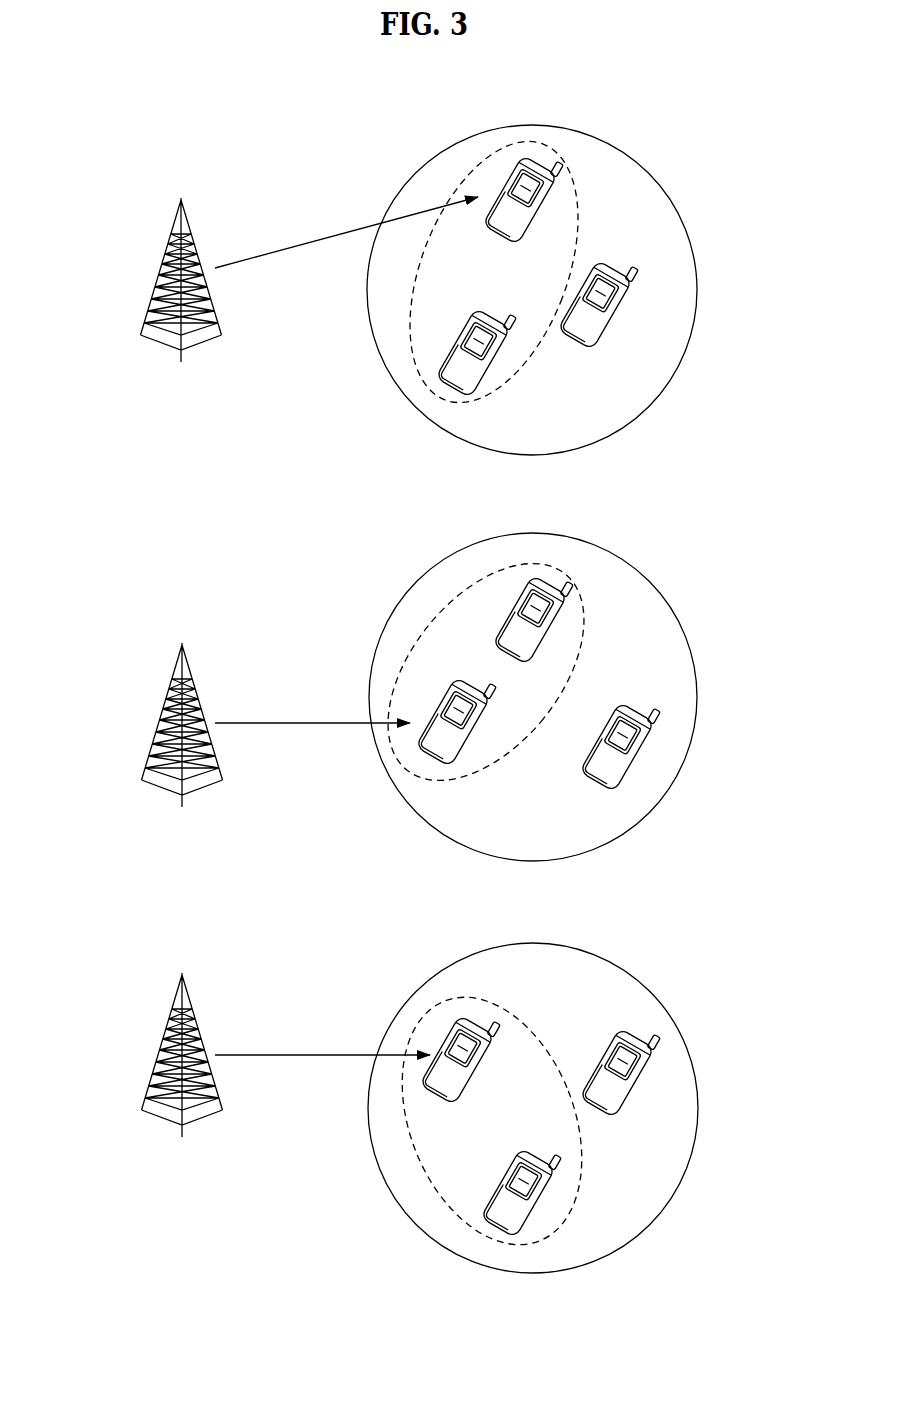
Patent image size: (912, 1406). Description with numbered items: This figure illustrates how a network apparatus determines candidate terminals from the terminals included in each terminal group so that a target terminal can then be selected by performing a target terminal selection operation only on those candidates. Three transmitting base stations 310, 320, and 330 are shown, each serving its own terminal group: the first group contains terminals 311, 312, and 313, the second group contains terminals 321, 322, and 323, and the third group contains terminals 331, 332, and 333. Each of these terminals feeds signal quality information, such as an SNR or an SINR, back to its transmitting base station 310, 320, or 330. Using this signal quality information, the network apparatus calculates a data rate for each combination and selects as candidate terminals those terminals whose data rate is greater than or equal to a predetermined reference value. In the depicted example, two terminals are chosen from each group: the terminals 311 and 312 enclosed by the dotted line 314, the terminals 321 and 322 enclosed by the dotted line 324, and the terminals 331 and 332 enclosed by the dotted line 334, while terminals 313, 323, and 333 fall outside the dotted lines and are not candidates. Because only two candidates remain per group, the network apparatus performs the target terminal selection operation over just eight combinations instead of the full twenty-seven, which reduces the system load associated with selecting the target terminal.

The transmitting base station 310 is at (165, 278).
The terminal 311 is at (507, 172).
The terminal 312 is at (437, 373).
The terminal 313 is at (622, 318).
The dotted line 314 is at (580, 197).
The transmitting base station 320 is at (168, 722).
The terminal 321 is at (515, 593).
The terminal 322 is at (470, 730).
The terminal 323 is at (637, 713).
The dotted line 324 is at (587, 627).
The transmitting base station 330 is at (168, 1052).
The terminal 331 is at (477, 1027).
The terminal 332 is at (537, 1200).
The terminal 333 is at (637, 1040).
The dotted line 334 is at (530, 1037).